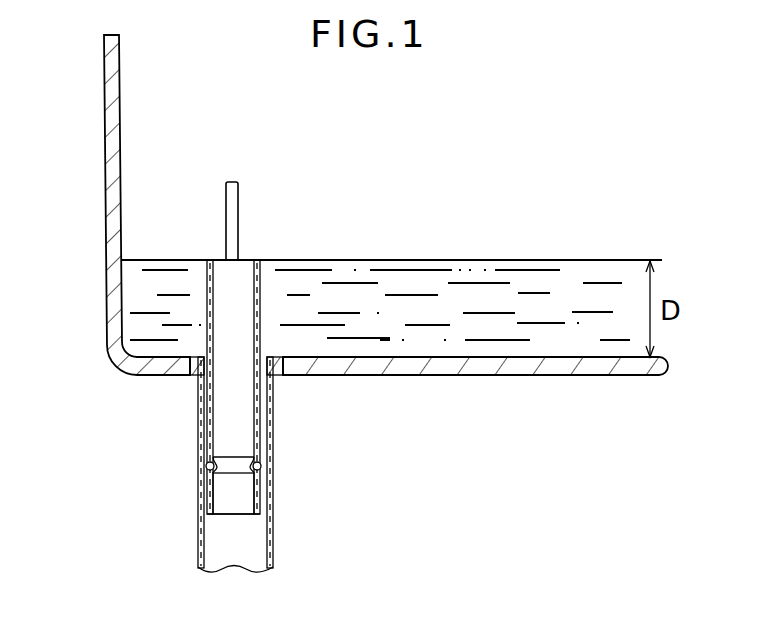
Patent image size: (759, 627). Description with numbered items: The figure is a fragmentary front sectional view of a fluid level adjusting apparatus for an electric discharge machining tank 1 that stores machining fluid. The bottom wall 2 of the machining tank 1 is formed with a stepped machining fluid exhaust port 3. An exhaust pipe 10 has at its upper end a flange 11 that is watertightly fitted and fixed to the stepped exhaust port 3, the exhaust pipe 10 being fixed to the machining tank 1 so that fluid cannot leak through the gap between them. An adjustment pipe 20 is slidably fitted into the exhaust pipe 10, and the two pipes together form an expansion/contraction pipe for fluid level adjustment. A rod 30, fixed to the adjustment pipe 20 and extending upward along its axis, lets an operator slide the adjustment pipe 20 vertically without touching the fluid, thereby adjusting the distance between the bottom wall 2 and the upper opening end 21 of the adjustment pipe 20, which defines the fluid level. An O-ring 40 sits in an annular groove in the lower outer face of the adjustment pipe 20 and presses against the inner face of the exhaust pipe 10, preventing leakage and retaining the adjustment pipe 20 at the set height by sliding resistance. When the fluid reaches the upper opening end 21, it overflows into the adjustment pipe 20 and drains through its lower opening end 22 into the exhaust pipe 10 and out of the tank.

The electric discharge machining tank 1 is at (88, 117).
The bottom wall 2 is at (492, 367).
The stepped machining fluid exhaust port 3 is at (190, 362).
The exhaust pipe 10 is at (270, 464).
The flange 11 is at (285, 376).
The adjustment pipe 20 is at (229, 368).
The upper opening end 21 is at (212, 258).
The lower opening end 22 is at (233, 514).
The rod 30 is at (239, 186).
The O-ring 40 is at (263, 465).